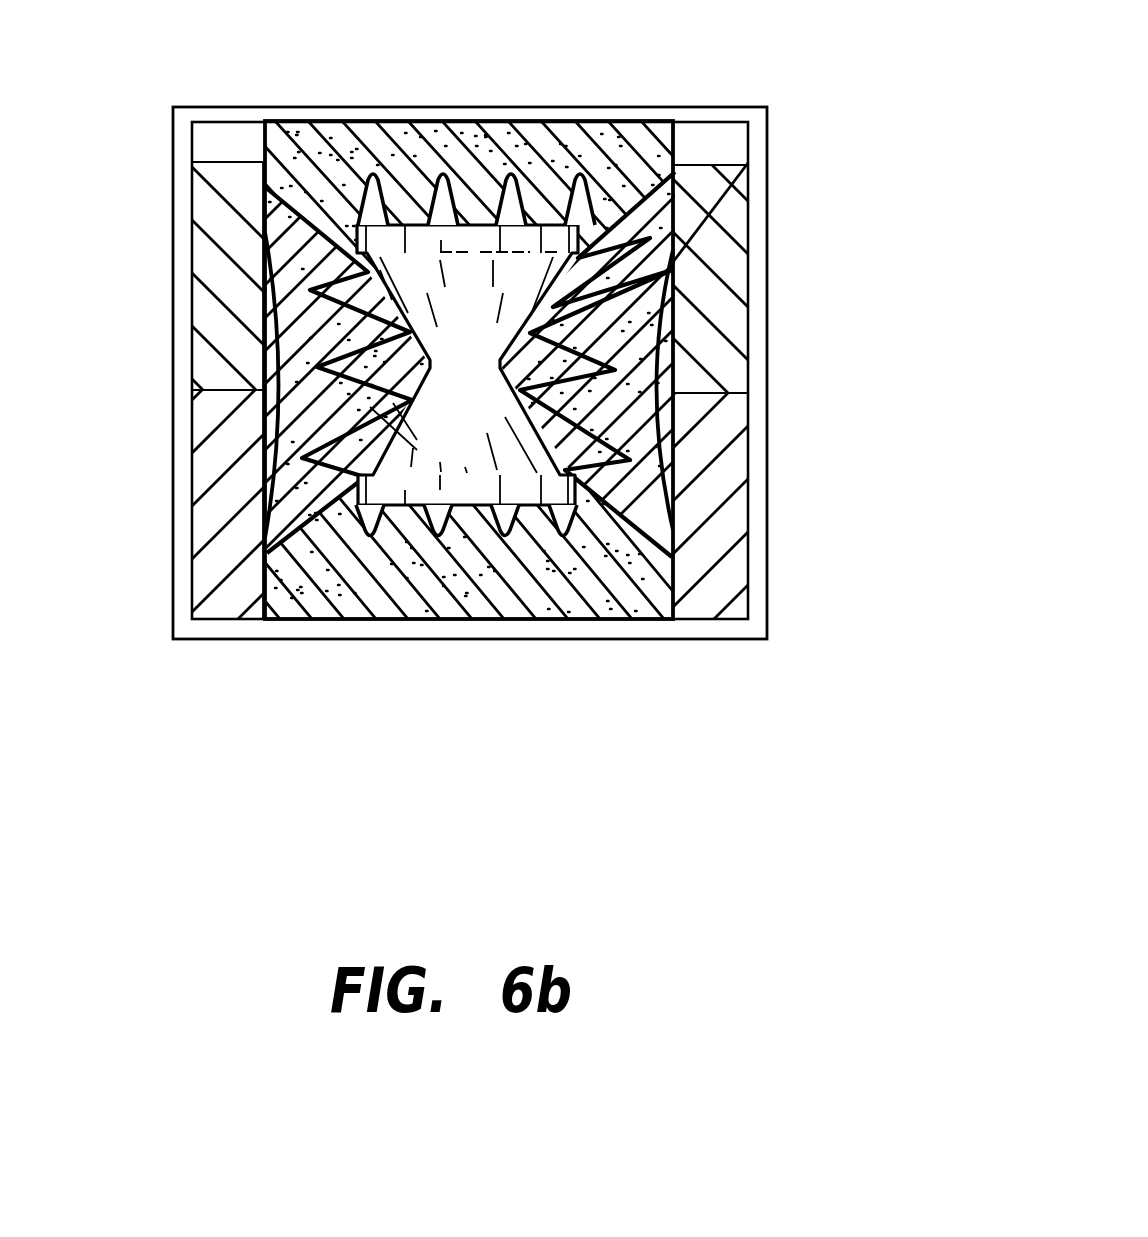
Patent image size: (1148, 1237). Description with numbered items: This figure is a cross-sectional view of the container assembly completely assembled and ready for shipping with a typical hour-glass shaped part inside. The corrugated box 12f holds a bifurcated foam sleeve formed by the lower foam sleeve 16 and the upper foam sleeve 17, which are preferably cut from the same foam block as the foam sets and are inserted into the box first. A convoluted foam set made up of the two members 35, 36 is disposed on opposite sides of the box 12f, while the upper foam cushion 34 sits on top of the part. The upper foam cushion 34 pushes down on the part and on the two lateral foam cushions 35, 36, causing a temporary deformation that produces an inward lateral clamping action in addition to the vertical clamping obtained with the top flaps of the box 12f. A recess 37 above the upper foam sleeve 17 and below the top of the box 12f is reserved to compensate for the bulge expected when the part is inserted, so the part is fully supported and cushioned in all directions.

The corrugated box 12f is at (643, 640).
The recess 37 is at (718, 140).
The upper foam sleeve 17 is at (732, 282).
The lower foam sleeve 16 is at (738, 505).
The upper foam cushion 34 is at (612, 142).
The convoluted foam set member 35 is at (298, 318).
The convoluted foam set member 36 is at (648, 272).